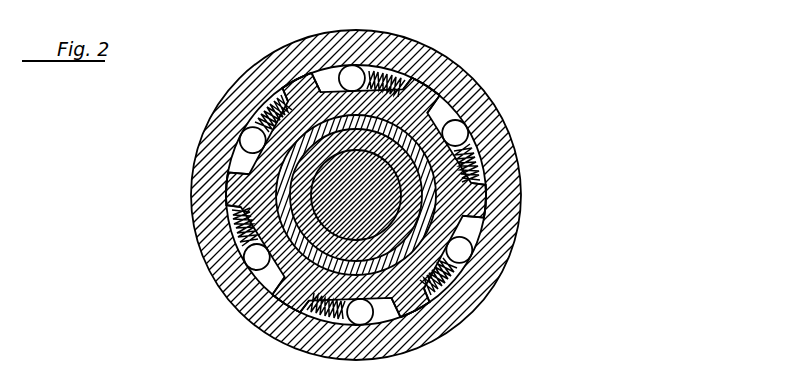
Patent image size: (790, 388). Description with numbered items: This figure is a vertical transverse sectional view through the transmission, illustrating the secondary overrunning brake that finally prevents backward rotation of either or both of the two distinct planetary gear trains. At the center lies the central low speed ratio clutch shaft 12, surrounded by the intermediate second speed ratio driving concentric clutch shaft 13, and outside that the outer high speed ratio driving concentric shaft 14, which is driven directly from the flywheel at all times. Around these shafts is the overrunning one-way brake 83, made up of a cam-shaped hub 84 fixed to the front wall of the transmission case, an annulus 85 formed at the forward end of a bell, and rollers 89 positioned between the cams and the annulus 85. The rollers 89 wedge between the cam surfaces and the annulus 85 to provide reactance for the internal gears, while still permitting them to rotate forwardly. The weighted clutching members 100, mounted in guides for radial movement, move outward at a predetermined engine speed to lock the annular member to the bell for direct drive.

The central low speed ratio clutch shaft 12 is at (380, 191).
The intermediate second speed ratio driving concentric clutch shaft 13 is at (303, 178).
The outer high speed ratio driving concentric shaft 14 is at (267, 247).
The overrunning one-way brake 83 is at (454, 70).
The cam-shaped hub 84 is at (462, 228).
The annulus 85 is at (450, 106).
The rollers 89 is at (253, 140).
The weighted clutching members 100 is at (398, 379).